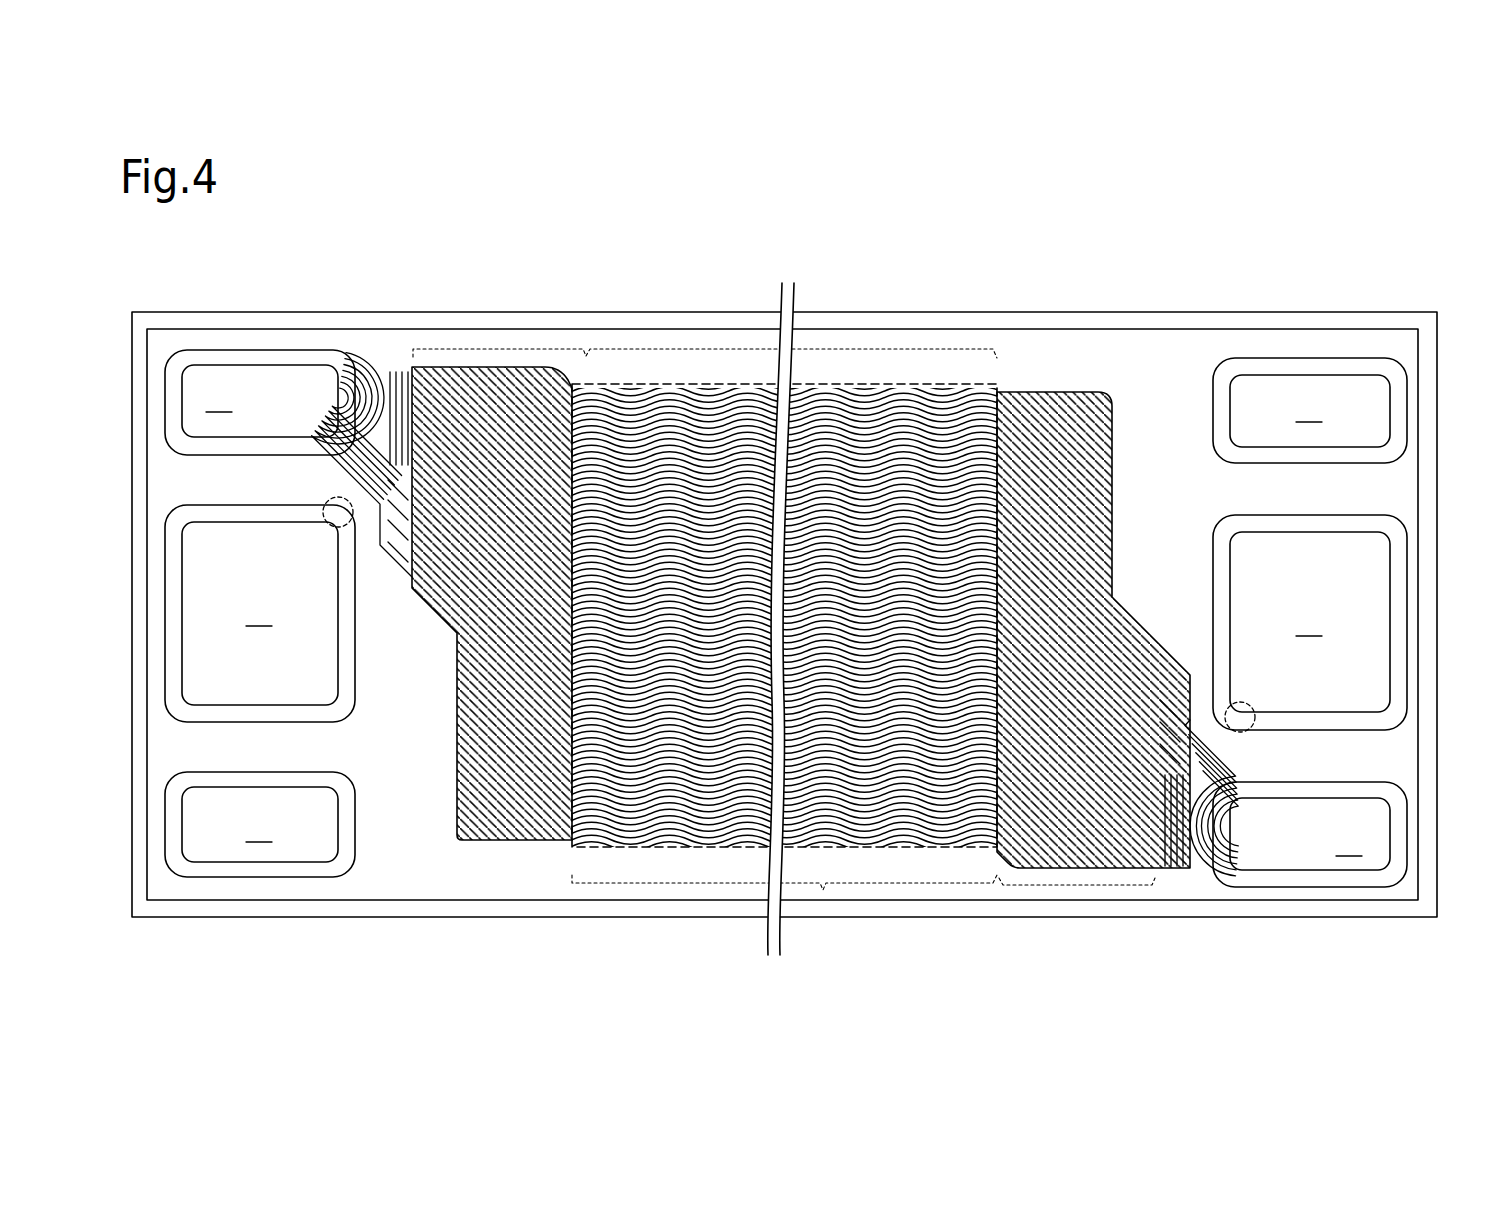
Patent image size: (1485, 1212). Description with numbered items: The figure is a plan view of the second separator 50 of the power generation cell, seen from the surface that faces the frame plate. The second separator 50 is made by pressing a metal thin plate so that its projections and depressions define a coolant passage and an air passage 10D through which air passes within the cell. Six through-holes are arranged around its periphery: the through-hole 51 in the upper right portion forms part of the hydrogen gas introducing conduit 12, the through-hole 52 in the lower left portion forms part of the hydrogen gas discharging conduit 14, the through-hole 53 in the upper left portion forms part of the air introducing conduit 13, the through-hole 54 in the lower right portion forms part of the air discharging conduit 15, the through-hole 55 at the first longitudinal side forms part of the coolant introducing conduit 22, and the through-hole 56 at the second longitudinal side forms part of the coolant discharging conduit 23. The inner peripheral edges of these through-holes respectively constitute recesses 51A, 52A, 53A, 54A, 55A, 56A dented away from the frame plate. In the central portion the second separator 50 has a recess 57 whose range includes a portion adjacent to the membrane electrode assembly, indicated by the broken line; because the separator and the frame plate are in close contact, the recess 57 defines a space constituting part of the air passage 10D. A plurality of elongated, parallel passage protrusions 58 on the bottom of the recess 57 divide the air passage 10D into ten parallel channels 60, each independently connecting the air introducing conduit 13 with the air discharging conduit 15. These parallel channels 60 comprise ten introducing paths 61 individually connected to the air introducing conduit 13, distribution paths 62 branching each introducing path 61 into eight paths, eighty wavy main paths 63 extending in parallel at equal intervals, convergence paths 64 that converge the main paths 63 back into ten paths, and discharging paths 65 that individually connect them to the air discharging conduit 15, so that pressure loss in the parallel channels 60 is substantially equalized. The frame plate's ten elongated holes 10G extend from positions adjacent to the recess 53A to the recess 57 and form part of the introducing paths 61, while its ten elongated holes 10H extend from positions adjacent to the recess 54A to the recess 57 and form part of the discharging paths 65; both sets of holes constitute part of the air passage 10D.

The second separator 50 is at (1408, 282).
The hydrogen gas introducing conduit 12 is at (1310, 409).
The air introducing conduit 13 is at (220, 399).
The hydrogen gas discharging conduit 14 is at (261, 829).
The air discharging conduit 15 is at (1350, 843).
The coolant introducing conduit 22 is at (1310, 623).
The coolant discharging conduit 23 is at (260, 613).
The through-hole 51 is at (1329, 447).
The recess 51A is at (1285, 463).
The through-hole 52 is at (255, 787).
The recess 52A is at (285, 772).
The through-hole 53 is at (226, 440).
The recess 53A is at (218, 352).
The through-hole 54 is at (1359, 798).
The recess 54A is at (1352, 888).
The through-hole 55 is at (1365, 532).
The recess 55A is at (1345, 730).
The through-hole 56 is at (225, 705).
The recess 56A is at (230, 518).
The recess 57 is at (795, 616).
The passage protrusions 58 is at (480, 720).
The parallel channels 60 is at (340, 518).
The introducing paths 61 is at (362, 362).
The distribution paths 62 is at (500, 349).
The main paths 63 is at (742, 349).
The convergence paths 64 is at (1080, 885).
The discharging paths 65 is at (1200, 878).
The air passage 10D is at (920, 412).
The elongated holes 10G is at (328, 426).
The elongated holes 10H is at (1240, 850).